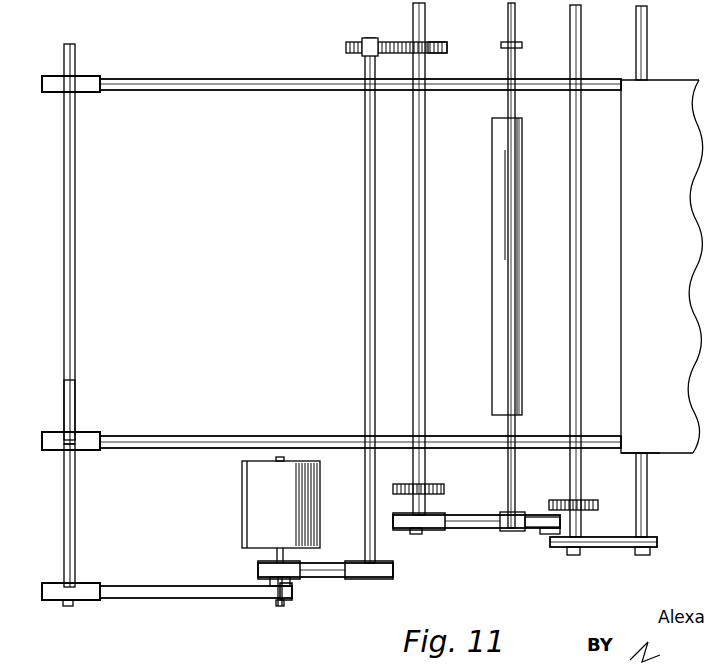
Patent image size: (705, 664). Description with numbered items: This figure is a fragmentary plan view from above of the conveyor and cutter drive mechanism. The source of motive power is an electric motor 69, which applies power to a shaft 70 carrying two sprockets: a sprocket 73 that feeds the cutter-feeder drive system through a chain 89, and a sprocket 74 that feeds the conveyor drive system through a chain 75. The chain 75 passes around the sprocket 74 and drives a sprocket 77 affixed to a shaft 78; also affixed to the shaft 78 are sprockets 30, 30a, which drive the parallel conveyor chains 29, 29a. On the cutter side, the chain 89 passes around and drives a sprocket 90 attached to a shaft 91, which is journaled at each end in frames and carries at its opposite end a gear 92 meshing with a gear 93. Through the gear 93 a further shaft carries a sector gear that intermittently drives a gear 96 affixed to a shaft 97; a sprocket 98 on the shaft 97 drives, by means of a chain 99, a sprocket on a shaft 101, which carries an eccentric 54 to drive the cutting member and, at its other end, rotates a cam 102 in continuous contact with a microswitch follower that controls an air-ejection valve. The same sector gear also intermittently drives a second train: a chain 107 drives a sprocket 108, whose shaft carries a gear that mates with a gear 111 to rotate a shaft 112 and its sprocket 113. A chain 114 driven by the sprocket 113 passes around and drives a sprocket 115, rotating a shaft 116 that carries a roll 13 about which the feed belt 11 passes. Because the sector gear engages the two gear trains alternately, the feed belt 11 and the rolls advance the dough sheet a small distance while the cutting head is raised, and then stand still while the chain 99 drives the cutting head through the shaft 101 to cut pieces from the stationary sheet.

The feed belt 11 is at (664, 132).
The roll 13 is at (640, 455).
The conveyor chain 29 is at (178, 445).
The conveyor chain 29a is at (212, 88).
The sprocket 30 is at (75, 430).
The sprocket 30a is at (75, 90).
The eccentric 54 is at (505, 148).
The electric motor 69 is at (258, 478).
The shaft 70 is at (280, 606).
The sprocket 73 is at (276, 556).
The sprocket 74 is at (290, 598).
The chain 75 is at (178, 590).
The sprocket 77 is at (80, 603).
The shaft 78 is at (66, 500).
The chain 89 is at (325, 577).
The sprocket 90 is at (360, 578).
The shaft 91 is at (370, 150).
The gear 92 is at (345, 47).
The gear 93 is at (445, 53).
The gear 96 is at (435, 485).
The shaft 97 is at (417, 110).
The sprocket 98 is at (400, 535).
The chain 99 is at (480, 528).
The shaft 101 is at (510, 18).
The cam 102 is at (522, 47).
The chain 107 is at (537, 515).
The sprocket 108 is at (555, 530).
The gear 111 is at (585, 503).
The shaft 112 is at (575, 165).
The sprocket 113 is at (553, 547).
The chain 114 is at (605, 547).
The sprocket 115 is at (655, 550).
The shaft 116 is at (642, 38).